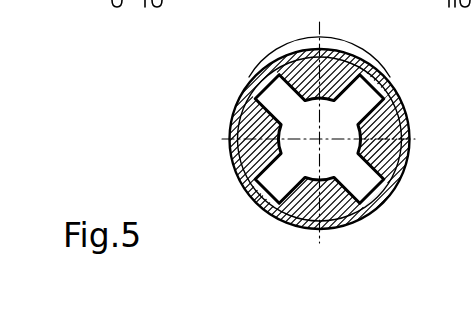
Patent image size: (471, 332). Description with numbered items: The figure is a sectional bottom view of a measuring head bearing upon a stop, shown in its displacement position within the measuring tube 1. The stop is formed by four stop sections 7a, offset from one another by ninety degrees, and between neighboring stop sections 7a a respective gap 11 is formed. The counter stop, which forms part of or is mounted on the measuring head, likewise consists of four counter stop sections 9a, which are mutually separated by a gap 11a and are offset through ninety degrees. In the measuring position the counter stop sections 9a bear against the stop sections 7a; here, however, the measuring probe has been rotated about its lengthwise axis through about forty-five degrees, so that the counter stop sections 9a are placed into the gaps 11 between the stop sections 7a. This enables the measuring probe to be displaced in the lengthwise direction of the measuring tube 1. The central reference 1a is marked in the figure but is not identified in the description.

The measuring tube 1 is at (394, 88).
The central axis of housing 1a is at (320, 140).
The stop sections 7a is at (335, 51).
The counter stop sections 9a is at (263, 95).
The gap 11 is at (263, 79).
The gap 11a is at (296, 51).